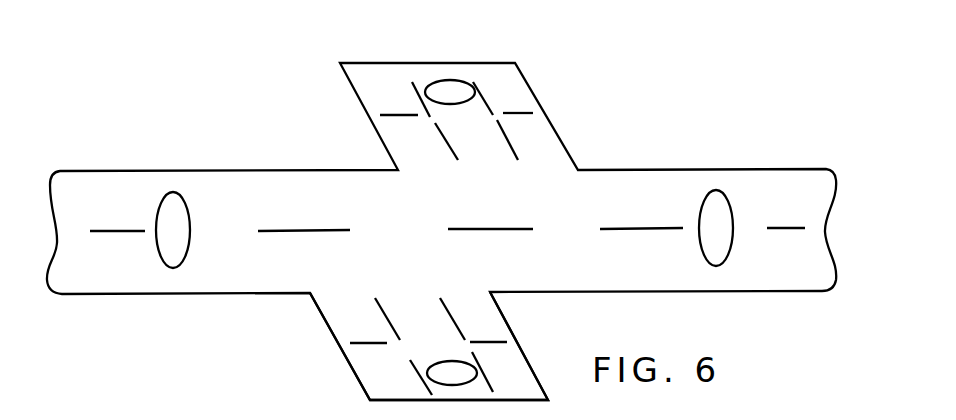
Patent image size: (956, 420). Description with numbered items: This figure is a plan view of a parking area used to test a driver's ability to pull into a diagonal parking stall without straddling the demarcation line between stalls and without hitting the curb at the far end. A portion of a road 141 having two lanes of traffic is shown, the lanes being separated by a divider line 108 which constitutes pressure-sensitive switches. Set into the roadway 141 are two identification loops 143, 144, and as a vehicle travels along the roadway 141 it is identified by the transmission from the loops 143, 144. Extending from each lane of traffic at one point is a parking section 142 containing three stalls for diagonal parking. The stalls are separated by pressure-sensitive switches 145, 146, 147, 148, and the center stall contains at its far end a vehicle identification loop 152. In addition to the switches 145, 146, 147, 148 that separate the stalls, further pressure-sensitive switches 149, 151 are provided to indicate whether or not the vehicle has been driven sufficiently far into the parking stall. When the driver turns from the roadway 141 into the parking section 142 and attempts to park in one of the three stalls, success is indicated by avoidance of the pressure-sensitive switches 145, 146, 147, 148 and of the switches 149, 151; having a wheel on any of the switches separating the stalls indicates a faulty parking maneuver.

The divider line 108 is at (308, 232).
The road 141 is at (233, 185).
The parking section 142 is at (354, 348).
The identification loop 143 is at (167, 220).
The identification loop 144 is at (701, 220).
The pressure-sensitive switch 145 is at (379, 304).
The pressure-sensitive switch 146 is at (444, 304).
The pressure-sensitive switch 147 is at (486, 375).
The pressure-sensitive switch 148 is at (419, 378).
The pressure-sensitive switch 149 is at (509, 342).
The pressure-sensitive switch 151 is at (379, 342).
The vehicle identification loop 152 is at (459, 365).